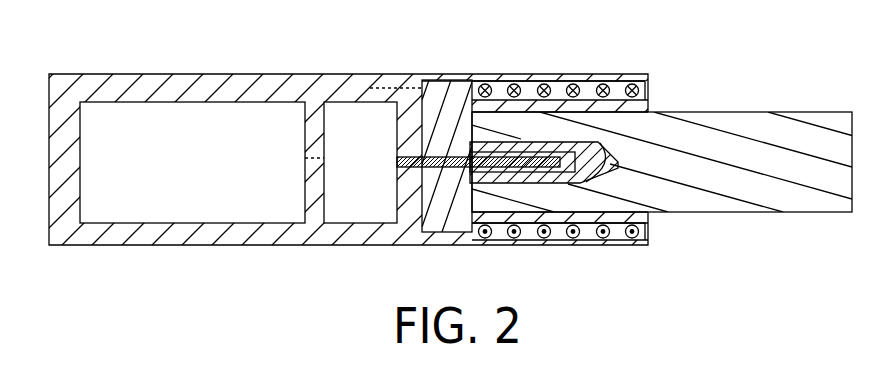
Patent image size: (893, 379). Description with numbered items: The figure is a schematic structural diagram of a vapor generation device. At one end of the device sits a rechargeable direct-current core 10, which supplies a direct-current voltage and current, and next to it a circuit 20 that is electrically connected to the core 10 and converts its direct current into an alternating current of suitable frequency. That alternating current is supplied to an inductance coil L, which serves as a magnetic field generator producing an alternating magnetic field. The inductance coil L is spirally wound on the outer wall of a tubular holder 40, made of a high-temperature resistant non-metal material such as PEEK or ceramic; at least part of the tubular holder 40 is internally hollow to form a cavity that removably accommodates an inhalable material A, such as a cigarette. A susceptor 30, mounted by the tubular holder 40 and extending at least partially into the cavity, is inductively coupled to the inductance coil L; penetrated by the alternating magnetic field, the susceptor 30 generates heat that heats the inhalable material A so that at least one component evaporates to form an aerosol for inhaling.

The core 10 is at (185, 110).
The circuit 20 is at (358, 117).
The susceptor 30 is at (492, 178).
The tubular holder 40 is at (475, 98).
The inductance coil L is at (576, 82).
The inhalable material A is at (737, 122).